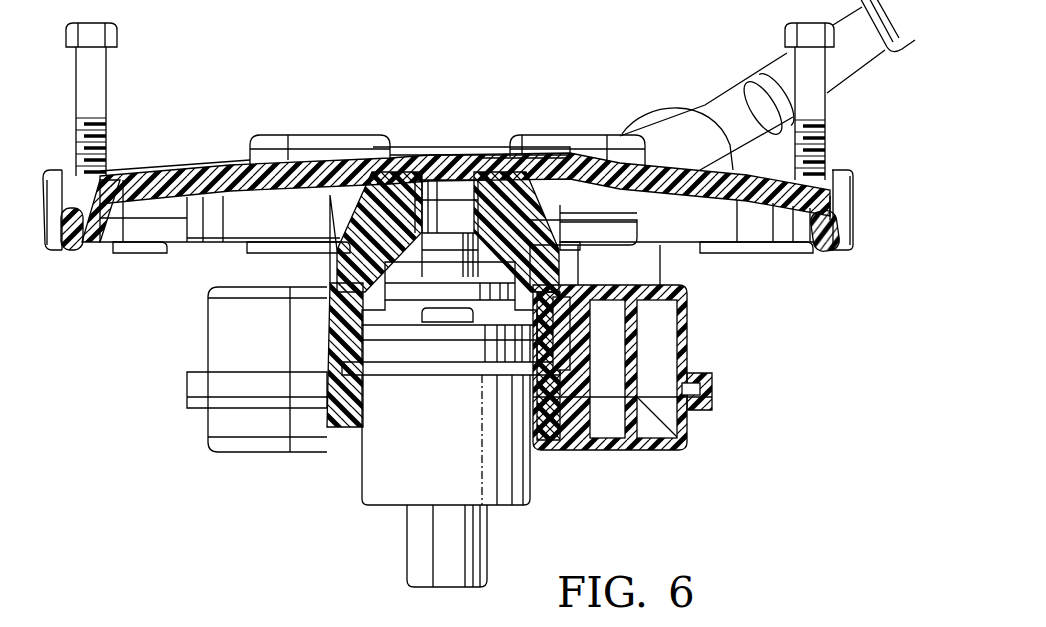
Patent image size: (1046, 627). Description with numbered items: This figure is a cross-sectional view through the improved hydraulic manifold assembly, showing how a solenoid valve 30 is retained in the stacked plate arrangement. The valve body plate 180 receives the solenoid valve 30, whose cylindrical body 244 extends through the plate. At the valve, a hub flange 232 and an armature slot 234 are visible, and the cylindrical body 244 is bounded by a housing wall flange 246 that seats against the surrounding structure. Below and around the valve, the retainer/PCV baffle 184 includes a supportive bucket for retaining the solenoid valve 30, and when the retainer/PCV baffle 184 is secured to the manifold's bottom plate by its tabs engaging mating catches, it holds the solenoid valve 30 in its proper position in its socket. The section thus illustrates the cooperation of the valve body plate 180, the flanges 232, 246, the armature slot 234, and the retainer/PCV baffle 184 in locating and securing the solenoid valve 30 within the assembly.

The valve body plate 180 is at (350, 188).
The hub flange 232 is at (372, 230).
The armature slot 234 is at (443, 315).
The cylindrical body 244 is at (450, 363).
The housing wall flange 246 is at (545, 390).
The retainer/PCV baffle 184 is at (719, 407).
The solenoid valve 30 is at (373, 478).